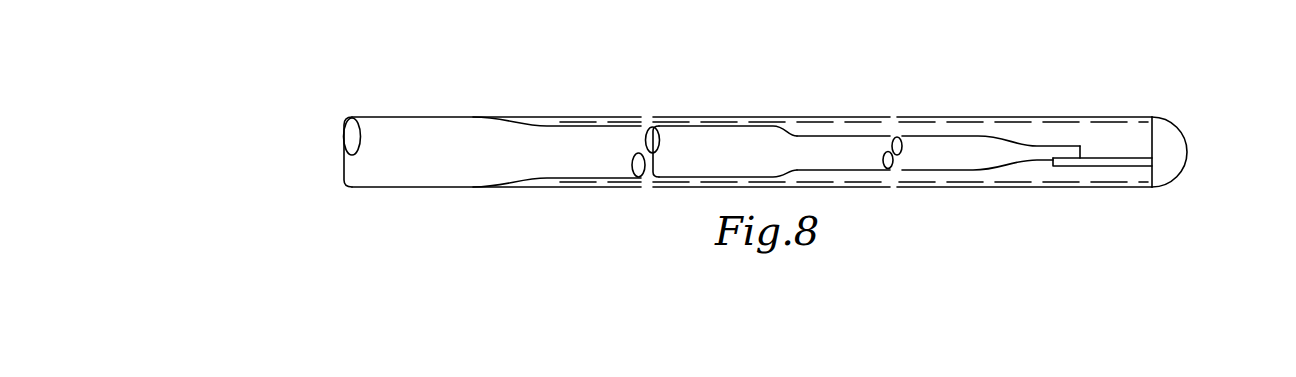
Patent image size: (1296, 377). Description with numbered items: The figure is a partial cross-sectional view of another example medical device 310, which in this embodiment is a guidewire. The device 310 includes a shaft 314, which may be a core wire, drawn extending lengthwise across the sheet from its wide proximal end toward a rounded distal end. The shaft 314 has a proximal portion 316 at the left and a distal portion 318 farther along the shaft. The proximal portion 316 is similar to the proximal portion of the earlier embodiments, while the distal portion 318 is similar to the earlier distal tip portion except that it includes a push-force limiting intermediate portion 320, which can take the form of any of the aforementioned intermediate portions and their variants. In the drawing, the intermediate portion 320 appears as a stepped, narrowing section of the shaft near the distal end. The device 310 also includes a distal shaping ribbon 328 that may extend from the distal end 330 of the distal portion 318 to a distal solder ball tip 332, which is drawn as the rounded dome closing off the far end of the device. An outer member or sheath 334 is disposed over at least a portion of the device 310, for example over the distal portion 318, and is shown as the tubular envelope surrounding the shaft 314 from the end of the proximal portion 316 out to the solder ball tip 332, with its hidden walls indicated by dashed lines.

The medical device 310 is at (552, 81).
The proximal portion 316 is at (403, 145).
The shaft 314 is at (603, 118).
The outer member or sheath 334 is at (682, 117).
The distal portion 318 is at (852, 134).
The push-force limiting intermediate portion 320 is at (950, 147).
The distal end 330 is at (1062, 155).
The distal shaping ribbon 328 is at (1098, 162).
The distal solder ball tip 332 is at (1180, 155).